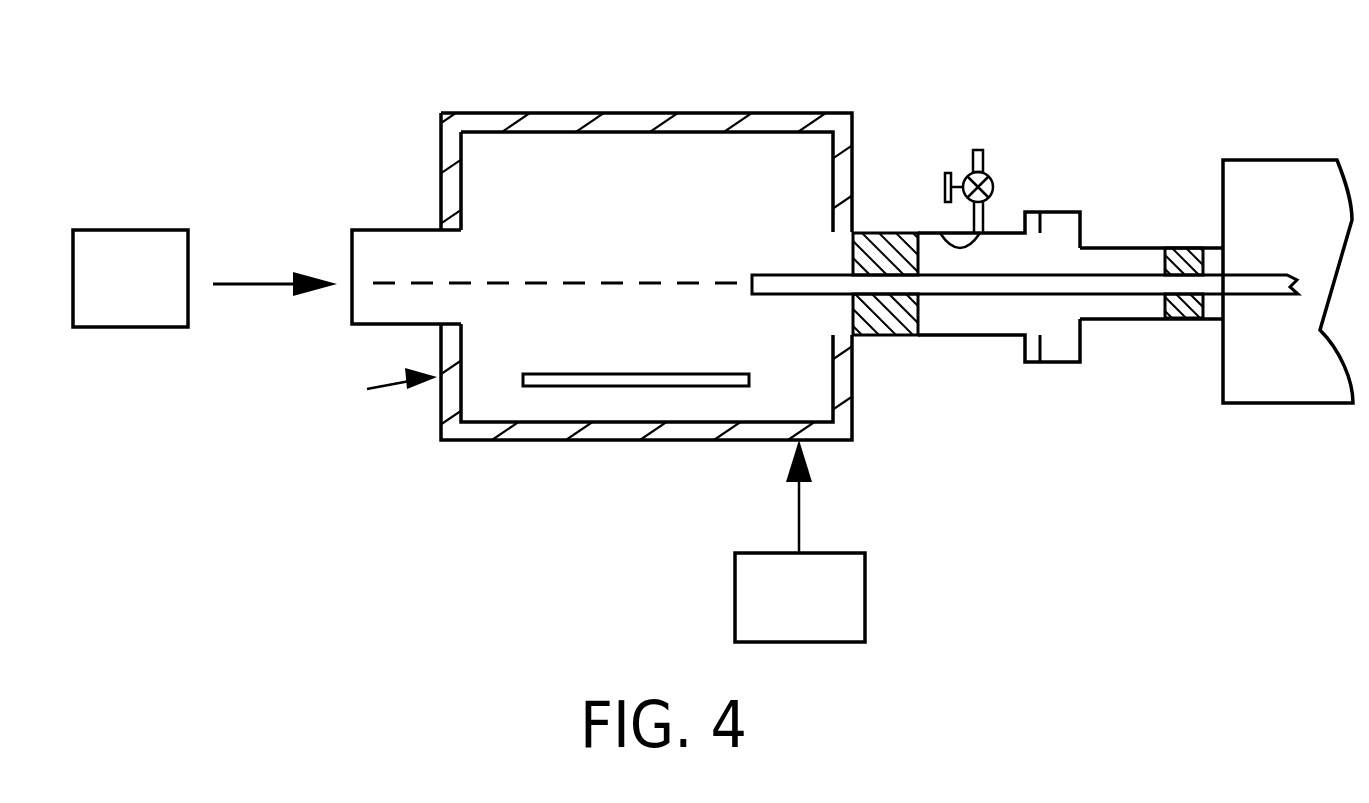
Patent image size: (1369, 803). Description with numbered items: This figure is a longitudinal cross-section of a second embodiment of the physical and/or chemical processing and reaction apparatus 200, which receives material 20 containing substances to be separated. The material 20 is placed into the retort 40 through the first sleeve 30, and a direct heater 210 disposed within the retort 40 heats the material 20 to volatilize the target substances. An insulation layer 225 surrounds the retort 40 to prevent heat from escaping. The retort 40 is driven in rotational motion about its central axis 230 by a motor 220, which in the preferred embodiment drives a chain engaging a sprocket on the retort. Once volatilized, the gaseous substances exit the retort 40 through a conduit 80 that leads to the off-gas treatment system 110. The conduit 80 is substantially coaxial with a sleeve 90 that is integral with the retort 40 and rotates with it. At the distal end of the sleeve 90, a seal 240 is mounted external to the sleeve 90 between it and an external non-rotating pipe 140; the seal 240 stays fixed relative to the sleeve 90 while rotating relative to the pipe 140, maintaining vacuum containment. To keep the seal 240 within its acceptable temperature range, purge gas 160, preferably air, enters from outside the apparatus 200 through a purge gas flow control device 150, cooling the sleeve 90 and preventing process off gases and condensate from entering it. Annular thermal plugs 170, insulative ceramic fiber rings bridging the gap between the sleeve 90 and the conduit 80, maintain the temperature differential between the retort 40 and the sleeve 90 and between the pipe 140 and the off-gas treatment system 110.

The material 20 is at (148, 295).
The first sleeve 30 is at (400, 230).
The retort 40 is at (668, 132).
The insulation layer 225 is at (568, 113).
The physical and/or chemical processing and reaction apparatus 200 is at (372, 387).
The central axis 230 is at (590, 283).
The direct heater 210 is at (603, 386).
The motor 220 is at (820, 615).
The thermal plugs 170 is at (885, 322).
The purge gas 160 is at (940, 233).
The purge gas flow control device 150 is at (985, 162).
The sleeve 90 is at (983, 337).
The seal 240 is at (1033, 355).
The conduit 80 is at (1123, 275).
The external non-rotating pipe 140 is at (1123, 318).
The off-gas treatment system 110 is at (1280, 373).